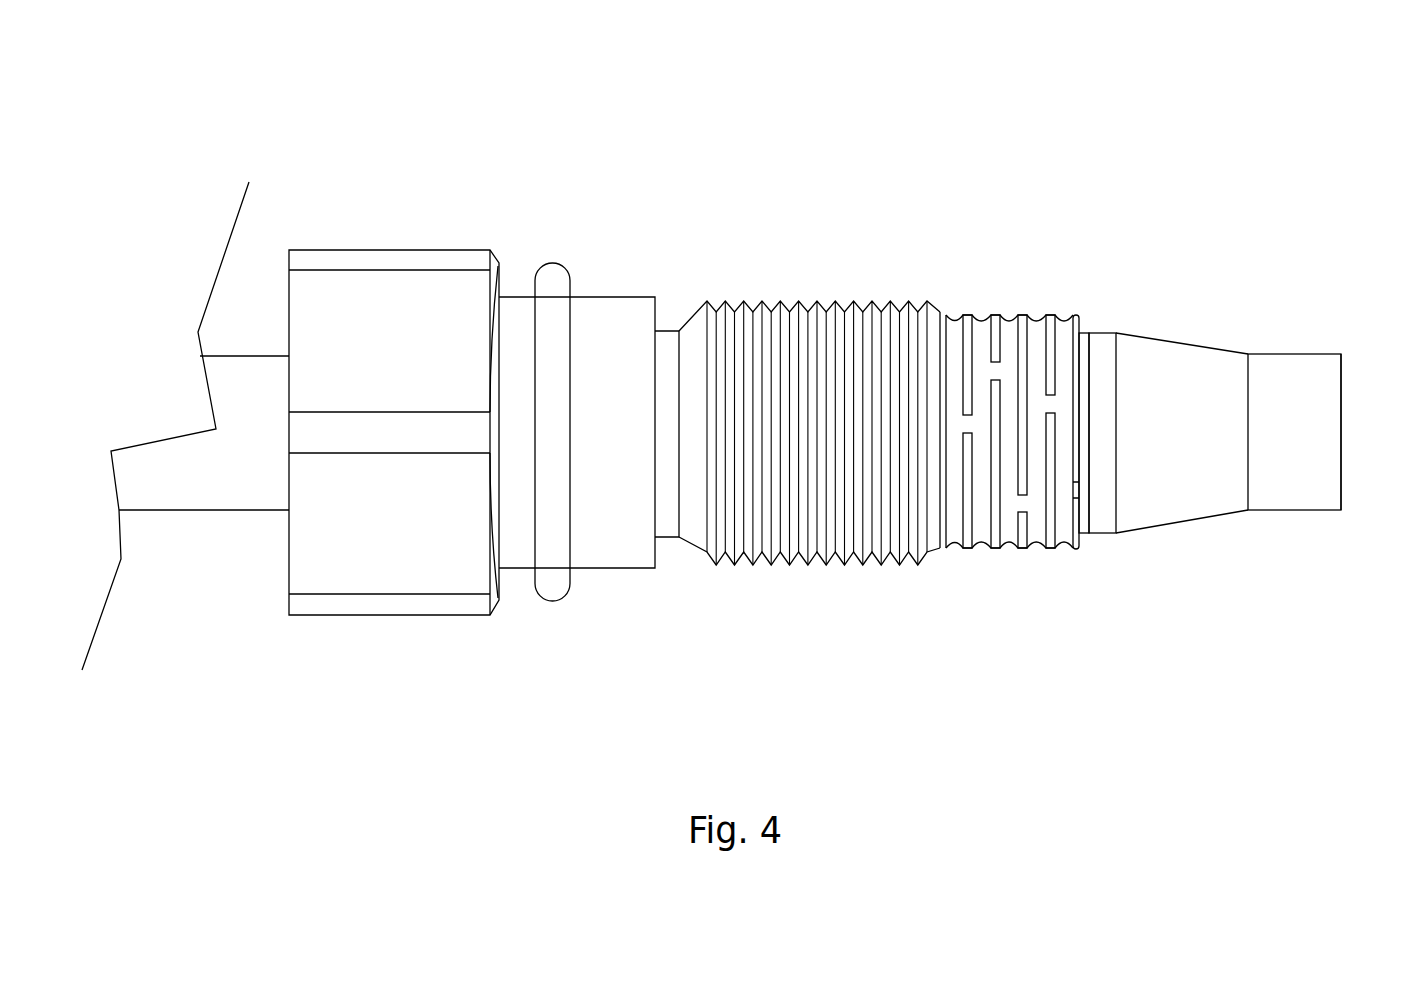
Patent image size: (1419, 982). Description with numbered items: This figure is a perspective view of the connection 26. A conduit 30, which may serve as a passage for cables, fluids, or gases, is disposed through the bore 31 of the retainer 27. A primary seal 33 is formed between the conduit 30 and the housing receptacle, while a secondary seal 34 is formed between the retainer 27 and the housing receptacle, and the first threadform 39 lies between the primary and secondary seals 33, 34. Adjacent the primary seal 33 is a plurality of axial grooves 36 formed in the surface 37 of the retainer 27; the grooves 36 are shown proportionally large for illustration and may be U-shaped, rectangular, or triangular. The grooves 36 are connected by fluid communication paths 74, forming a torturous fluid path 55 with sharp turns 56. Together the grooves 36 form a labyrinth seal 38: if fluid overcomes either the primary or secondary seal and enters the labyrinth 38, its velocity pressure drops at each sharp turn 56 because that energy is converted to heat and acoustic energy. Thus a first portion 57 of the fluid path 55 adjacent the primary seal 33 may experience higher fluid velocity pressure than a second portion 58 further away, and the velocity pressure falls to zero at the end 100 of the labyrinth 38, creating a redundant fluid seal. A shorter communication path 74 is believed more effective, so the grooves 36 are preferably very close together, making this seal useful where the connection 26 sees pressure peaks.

The connection 26 is at (1015, 139).
The retainer 27 is at (944, 282).
The conduit 30 is at (1282, 402).
The bore 31 is at (1364, 467).
The primary seal 33 is at (1148, 392).
The secondary seal 34 is at (547, 220).
The grooves 36 is at (1102, 549).
The surface 37 is at (1048, 530).
The labyrinth seal 38 is at (1080, 639).
The first threadform 39 is at (803, 337).
The torturous fluid path 55 is at (1070, 298).
The sharp turns 56 is at (995, 362).
The first portion 57 is at (1046, 609).
The second portion 58 is at (968, 614).
The communication path 74 is at (968, 435).
The end 100 is at (953, 472).